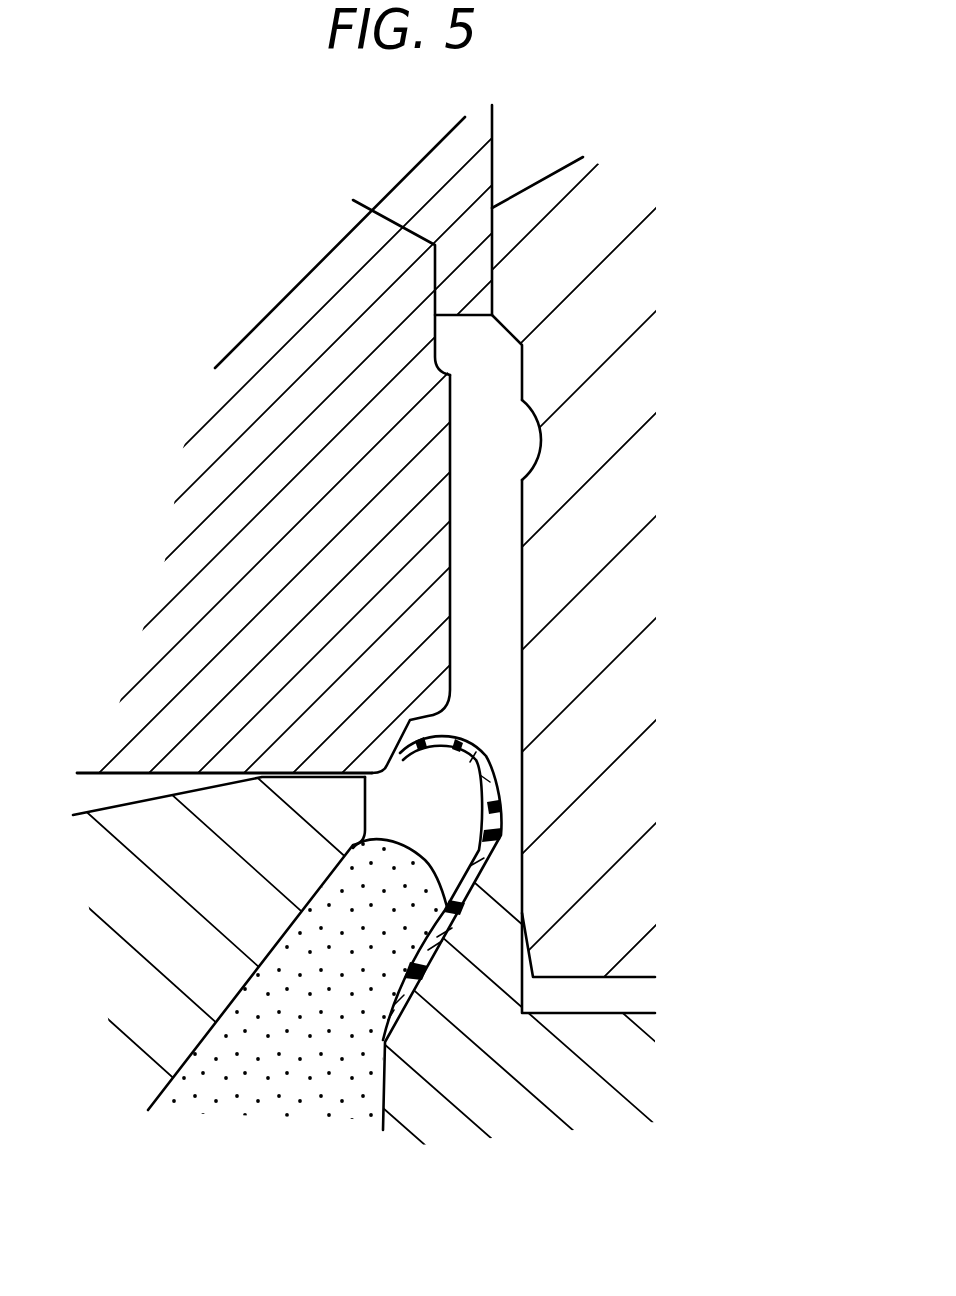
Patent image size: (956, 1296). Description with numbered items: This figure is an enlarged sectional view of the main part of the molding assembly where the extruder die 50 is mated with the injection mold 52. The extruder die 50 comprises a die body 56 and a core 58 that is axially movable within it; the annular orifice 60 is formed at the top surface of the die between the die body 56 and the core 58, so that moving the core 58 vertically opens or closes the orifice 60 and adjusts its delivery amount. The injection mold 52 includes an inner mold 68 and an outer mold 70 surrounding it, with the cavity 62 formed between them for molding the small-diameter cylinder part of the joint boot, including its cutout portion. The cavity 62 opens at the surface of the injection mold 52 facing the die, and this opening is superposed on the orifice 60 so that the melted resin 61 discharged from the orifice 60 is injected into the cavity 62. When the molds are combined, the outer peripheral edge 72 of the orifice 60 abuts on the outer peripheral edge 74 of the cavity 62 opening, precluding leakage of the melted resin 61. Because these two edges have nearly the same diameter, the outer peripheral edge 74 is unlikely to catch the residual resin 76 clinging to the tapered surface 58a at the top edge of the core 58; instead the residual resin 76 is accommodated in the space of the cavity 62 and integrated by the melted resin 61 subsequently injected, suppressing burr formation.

The extruder die 50 is at (600, 1142).
The injection mold 52 is at (262, 285).
The die body 56 is at (158, 947).
The core 58 is at (507, 1103).
The tapered surface 58a is at (427, 943).
The orifice 60 is at (450, 813).
The melted resin 61 is at (345, 997).
The cavity 62 is at (495, 430).
The inner mold 68 is at (600, 505).
The outer mold 70 is at (262, 447).
The outer peripheral edge of the orifice 72 is at (321, 765).
The outer peripheral edge of the opening of the cavity 74 is at (335, 782).
The residual resin 76 is at (487, 755).